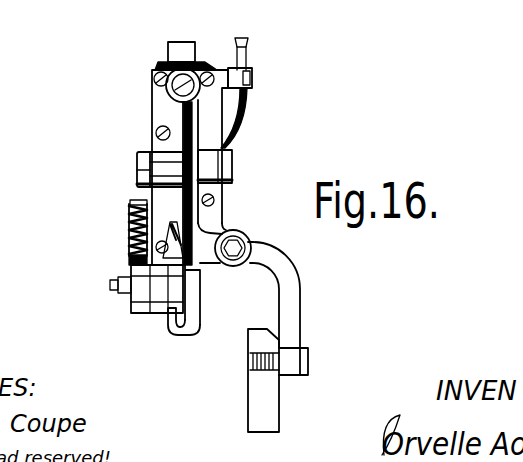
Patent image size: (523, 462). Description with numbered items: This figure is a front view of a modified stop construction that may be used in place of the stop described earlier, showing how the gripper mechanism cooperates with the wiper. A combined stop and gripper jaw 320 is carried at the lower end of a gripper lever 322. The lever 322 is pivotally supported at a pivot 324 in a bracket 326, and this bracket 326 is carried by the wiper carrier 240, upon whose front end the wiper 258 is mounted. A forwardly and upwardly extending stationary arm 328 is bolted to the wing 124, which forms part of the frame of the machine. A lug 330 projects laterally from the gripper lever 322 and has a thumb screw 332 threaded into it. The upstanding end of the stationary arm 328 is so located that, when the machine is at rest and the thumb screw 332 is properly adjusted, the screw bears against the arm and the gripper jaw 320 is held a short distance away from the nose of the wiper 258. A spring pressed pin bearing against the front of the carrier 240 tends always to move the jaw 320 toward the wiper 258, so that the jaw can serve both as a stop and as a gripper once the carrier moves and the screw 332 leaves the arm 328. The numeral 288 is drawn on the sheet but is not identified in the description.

The wing 124 is at (263, 408).
The wiper carrier 240 is at (158, 107).
The wiper 258 is at (170, 332).
The top block 288 is at (173, 53).
The combined stop and gripper jaw 320 is at (185, 337).
The gripper lever 322 is at (192, 222).
The pivot 324 is at (143, 163).
The bracket 326 is at (143, 187).
The stationary arm 328 is at (290, 297).
The lug 330 is at (131, 261).
The thumb screw 332 is at (236, 268).